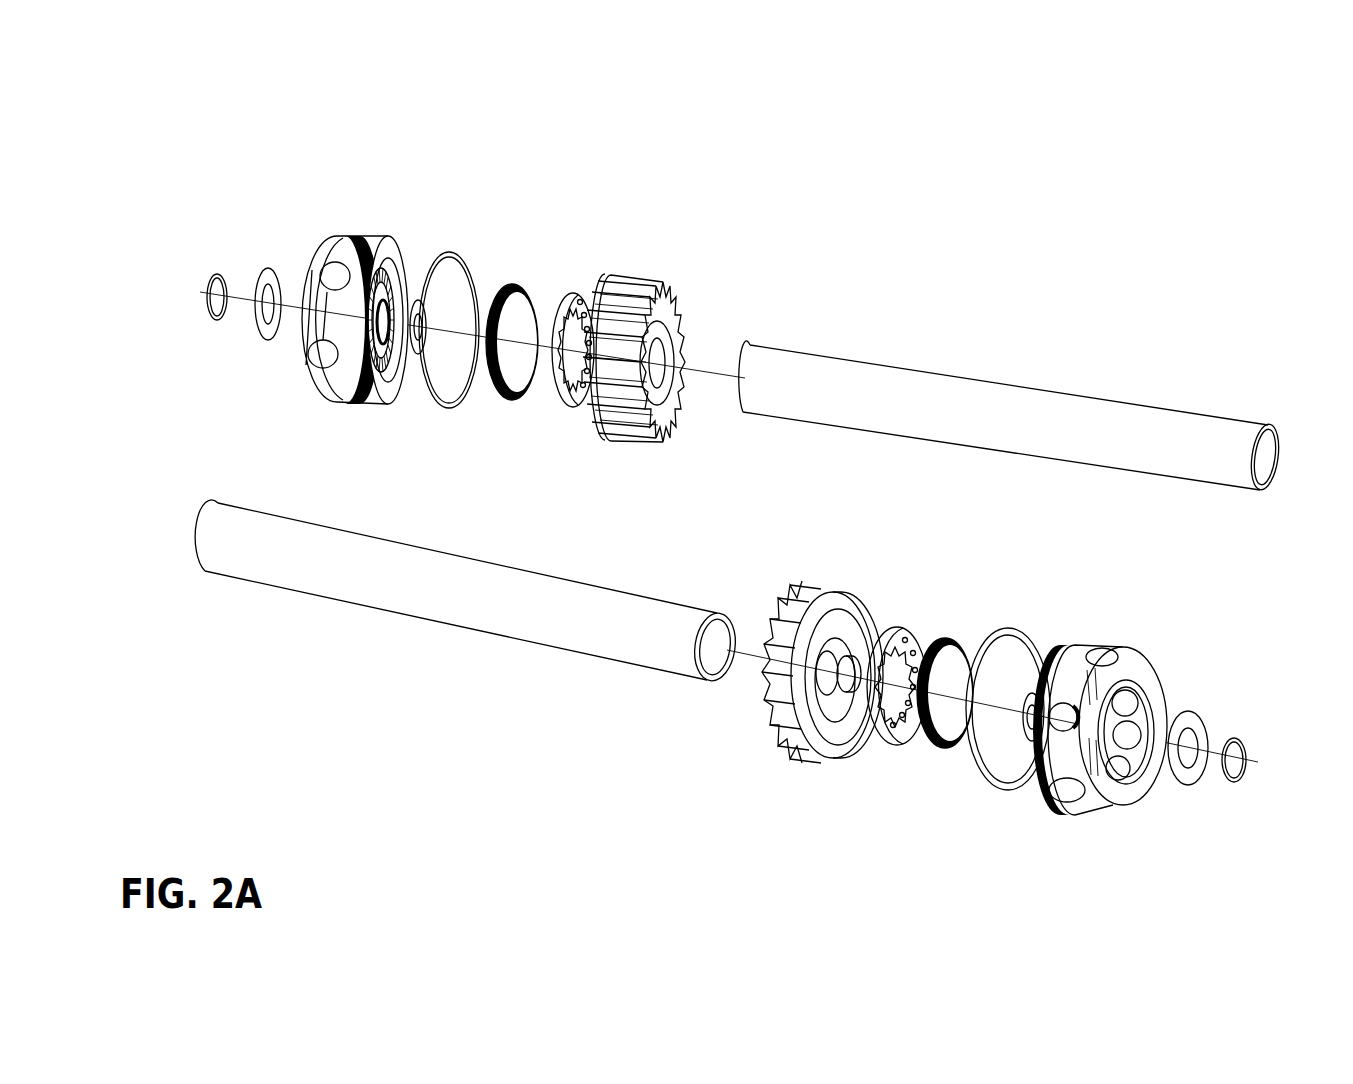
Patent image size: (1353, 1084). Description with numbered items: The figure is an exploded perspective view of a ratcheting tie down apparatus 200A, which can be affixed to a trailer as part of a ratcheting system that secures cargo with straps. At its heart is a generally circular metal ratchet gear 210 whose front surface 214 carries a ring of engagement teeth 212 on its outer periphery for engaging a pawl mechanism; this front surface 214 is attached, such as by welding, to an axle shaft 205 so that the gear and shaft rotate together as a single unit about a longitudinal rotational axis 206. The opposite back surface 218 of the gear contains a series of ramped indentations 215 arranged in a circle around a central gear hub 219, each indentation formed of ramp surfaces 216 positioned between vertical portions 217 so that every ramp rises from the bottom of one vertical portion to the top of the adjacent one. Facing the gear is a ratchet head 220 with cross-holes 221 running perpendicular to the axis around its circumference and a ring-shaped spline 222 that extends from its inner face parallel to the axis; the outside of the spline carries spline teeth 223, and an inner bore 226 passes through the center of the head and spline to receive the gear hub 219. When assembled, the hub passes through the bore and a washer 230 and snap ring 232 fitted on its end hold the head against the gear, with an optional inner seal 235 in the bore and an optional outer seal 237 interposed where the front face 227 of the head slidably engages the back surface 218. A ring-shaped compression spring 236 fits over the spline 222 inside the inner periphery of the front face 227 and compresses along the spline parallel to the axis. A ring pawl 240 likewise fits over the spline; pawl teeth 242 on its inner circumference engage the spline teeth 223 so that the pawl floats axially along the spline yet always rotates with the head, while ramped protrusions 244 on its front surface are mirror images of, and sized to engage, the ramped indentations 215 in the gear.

The ratcheting tie down apparatus 200A is at (1165, 179).
The axle shaft 205 is at (977, 393).
The longitudinal/rotational axis 206 is at (697, 372).
The ratchet gear 210 is at (680, 360).
The engagement teeth 212 is at (623, 420).
The front surface 214 is at (662, 310).
The ramped indentations 215 is at (786, 675).
The ramp surfaces 216 is at (857, 630).
The vertical portions 217 is at (845, 622).
The back surface 218 is at (823, 737).
The gear hub 219 is at (828, 673).
The ratchet head 220 is at (728, 481).
The cross-holes 221 is at (328, 277).
The spline 222 is at (402, 287).
The spline teeth 223 is at (350, 395).
The inner bore 226 is at (395, 352).
The front face 227 is at (390, 250).
The washer 230 is at (263, 335).
The snap ring 232 is at (210, 292).
The inner seal 235 is at (414, 350).
The compression spring 236 is at (512, 287).
The outer seal 237 is at (453, 390).
The ring pawl 240 is at (772, 509).
The pawl teeth 242 is at (894, 728).
The ramped protrusions 244 is at (578, 300).